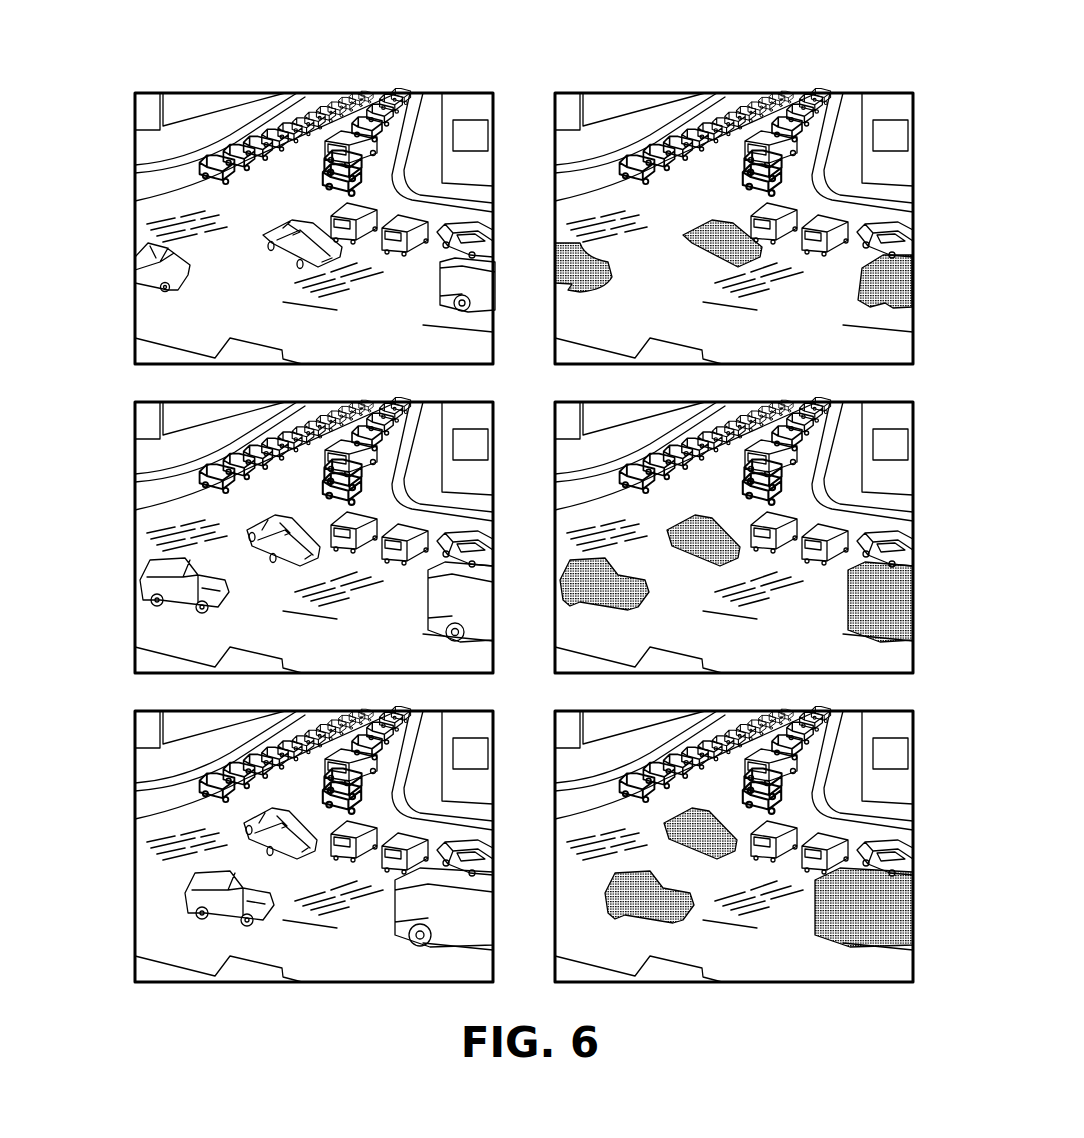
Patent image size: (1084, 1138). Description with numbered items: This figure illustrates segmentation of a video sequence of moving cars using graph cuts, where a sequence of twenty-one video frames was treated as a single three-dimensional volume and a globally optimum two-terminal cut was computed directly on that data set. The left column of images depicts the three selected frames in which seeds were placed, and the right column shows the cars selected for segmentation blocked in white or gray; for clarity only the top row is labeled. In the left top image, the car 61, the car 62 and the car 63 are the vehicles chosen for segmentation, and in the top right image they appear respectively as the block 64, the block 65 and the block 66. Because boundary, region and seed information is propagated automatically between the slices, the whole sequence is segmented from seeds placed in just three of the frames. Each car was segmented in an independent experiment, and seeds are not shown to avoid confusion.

The car 61 is at (126, 261).
The car 62 is at (303, 208).
The car 63 is at (498, 261).
The block 64 is at (569, 232).
The block 65 is at (720, 206).
The block 66 is at (921, 249).